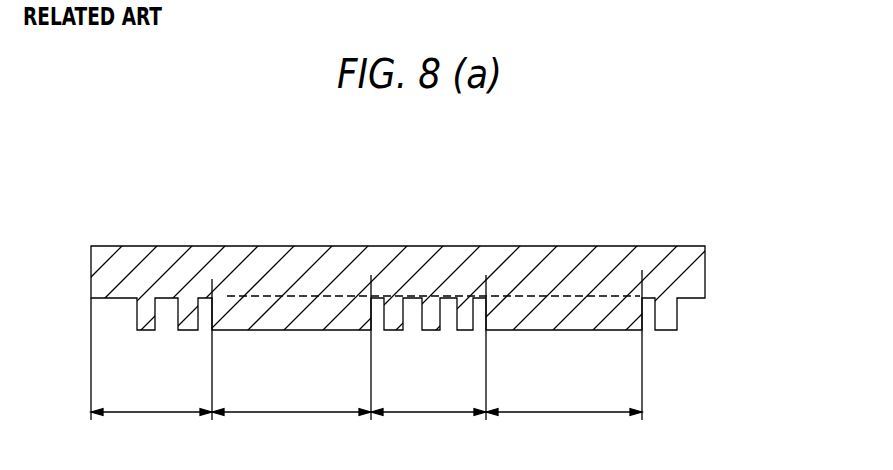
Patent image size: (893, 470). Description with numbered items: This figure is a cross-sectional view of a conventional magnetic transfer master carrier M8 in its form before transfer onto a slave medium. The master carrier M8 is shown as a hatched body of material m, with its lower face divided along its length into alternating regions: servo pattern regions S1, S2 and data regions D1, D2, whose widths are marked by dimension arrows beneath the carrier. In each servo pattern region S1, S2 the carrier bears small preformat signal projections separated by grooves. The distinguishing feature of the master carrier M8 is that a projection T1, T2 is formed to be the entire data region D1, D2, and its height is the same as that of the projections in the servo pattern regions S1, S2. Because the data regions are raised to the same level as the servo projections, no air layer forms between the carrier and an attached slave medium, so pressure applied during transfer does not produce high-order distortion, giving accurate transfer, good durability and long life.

The magnetic transfer master carrier M8 is at (693, 272).
The mold material m is at (345, 273).
The projection T1 is at (287, 322).
The projection T2 is at (557, 318).
The servo pattern region S1 is at (151, 360).
The data region D1 is at (291, 358).
The servo pattern region S2 is at (428, 358).
The data region D2 is at (564, 356).